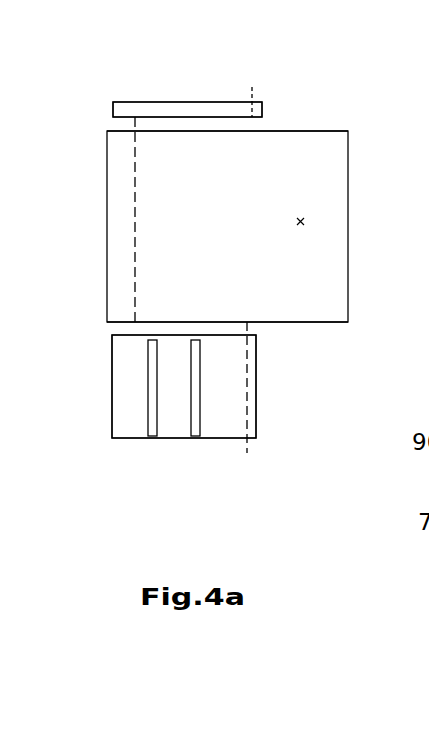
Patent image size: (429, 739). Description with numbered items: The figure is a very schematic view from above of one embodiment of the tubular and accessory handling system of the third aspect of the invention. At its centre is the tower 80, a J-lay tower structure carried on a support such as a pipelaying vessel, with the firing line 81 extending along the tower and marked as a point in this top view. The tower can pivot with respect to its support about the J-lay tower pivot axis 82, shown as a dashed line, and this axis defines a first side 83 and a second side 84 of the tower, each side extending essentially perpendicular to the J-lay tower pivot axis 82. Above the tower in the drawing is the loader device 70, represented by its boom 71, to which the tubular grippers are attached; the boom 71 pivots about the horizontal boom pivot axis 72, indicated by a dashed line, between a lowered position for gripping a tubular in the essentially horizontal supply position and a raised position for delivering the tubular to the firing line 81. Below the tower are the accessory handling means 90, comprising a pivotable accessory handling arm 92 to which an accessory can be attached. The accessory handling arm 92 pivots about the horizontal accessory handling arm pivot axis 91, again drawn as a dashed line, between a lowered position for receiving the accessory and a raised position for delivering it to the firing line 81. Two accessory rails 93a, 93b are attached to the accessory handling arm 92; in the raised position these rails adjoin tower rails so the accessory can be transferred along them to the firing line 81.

The loader device 70 is at (118, 95).
The boom 71 is at (160, 104).
The horizontal boom pivot axis 72 is at (253, 87).
The tower 80 is at (349, 165).
The firing line 81 is at (300, 218).
The J-lay tower pivot axis 82 is at (136, 220).
The first side 83 is at (310, 131).
The second side 84 is at (318, 322).
The accessory handling means 90 is at (105, 418).
The horizontal accessory handling arm pivot axis 91 is at (247, 452).
The accessory handling arm 92 is at (176, 424).
The accessory rail 93a is at (148, 352).
The accessory rail 93b is at (200, 352).